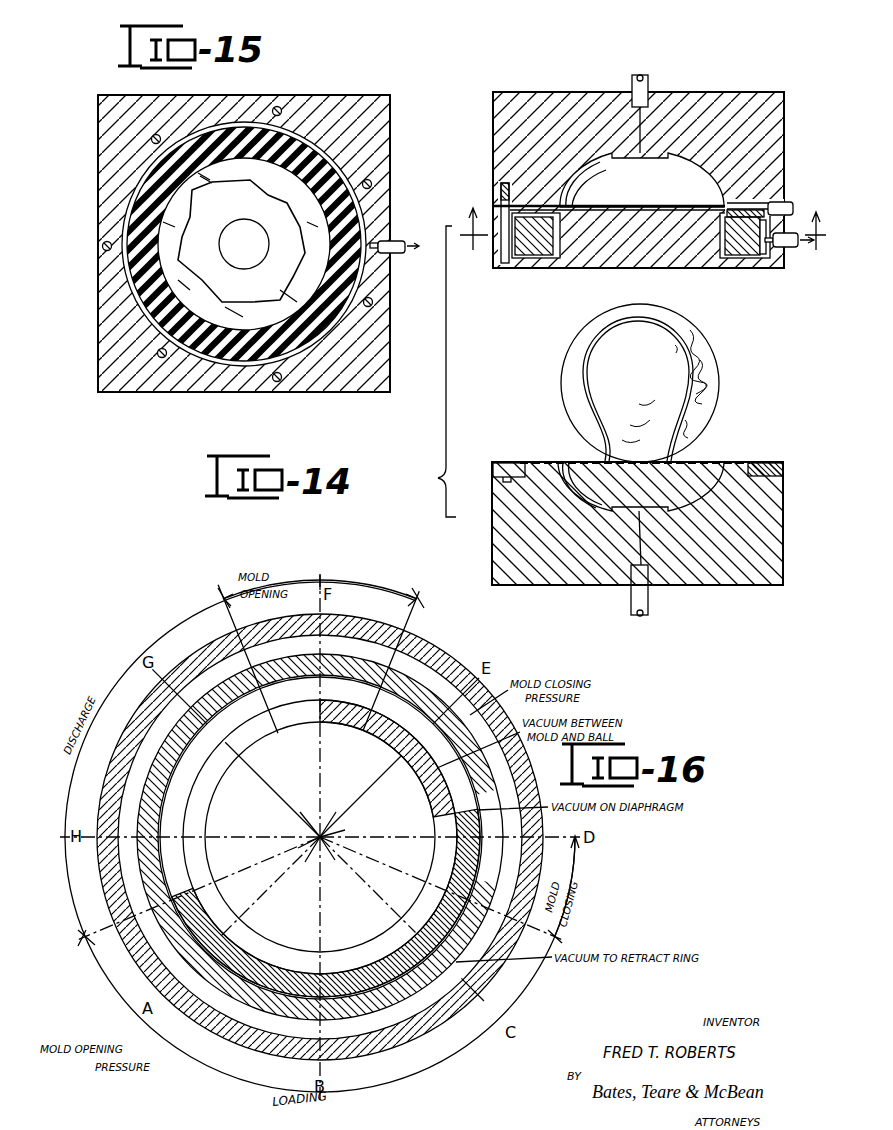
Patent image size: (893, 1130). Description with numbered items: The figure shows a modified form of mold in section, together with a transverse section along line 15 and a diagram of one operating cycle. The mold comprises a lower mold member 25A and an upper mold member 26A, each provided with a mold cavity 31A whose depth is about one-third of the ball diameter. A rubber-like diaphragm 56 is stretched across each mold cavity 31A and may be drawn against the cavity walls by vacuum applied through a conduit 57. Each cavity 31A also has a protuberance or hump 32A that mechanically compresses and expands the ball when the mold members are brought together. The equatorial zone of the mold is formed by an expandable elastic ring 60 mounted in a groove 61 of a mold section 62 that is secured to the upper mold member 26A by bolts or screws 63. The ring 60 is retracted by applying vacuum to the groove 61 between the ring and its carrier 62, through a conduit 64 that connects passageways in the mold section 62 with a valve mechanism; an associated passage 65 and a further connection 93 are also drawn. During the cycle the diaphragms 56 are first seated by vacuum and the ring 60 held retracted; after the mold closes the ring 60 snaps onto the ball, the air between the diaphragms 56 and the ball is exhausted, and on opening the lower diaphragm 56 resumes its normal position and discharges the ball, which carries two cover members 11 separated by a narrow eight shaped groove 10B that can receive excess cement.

In FIG. 14, the conduit 57 is at (648, 80).
In FIG. 14, the upper mold member 26A is at (769, 92).
In FIG. 15, the protuberance or hump 32A is at (272, 214).
In FIG. 14, the protuberance or hump 32A is at (637, 168).
In FIG. 15, the mold cavity 31A is at (240, 245).
In FIG. 14, the mold cavity 31A is at (641, 332).
In FIG. 15, the diaphragm 56 is at (178, 254).
In FIG. 14, the diaphragm 56 is at (645, 218).
In FIG. 14, the vacuum conduit 93 is at (782, 202).
In FIG. 14, the section line 15- 15 is at (643, 219).
In FIG. 15, the bolts or screws 63 is at (103, 246).
In FIG. 14, the bolts or screws 63 is at (505, 267).
In FIG. 15, the mold section 62 is at (104, 272).
In FIG. 14, the mold section 62 is at (548, 260).
In FIG. 15, the expandable elastic ring 60 is at (130, 288).
In FIG. 14, the expandable elastic ring 60 is at (735, 244).
In FIG. 15, the groove 61 is at (143, 292).
In FIG. 14, the groove 61 is at (763, 258).
In FIG. 14, the passage 65 is at (776, 252).
In FIG. 15, the conduit 64 is at (386, 241).
In FIG. 14, the conduit 64 is at (795, 250).
In FIG. 14, the cover members 11 is at (713, 383).
In FIG. 14, the eight shaped groove 10B is at (694, 401).
In FIG. 14, the lower mold member 25A is at (724, 584).